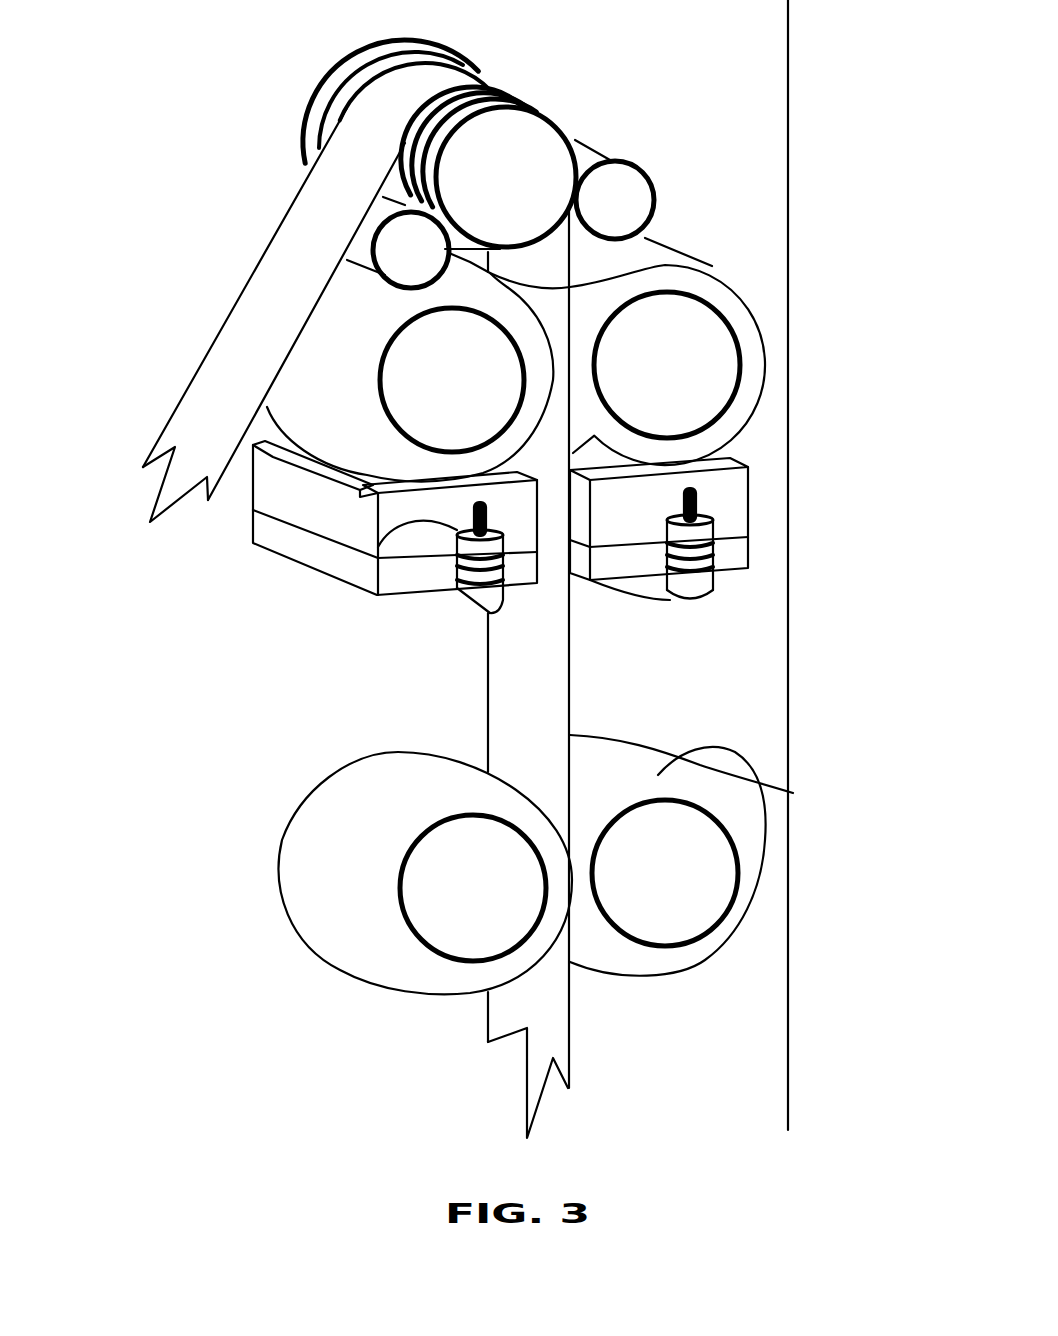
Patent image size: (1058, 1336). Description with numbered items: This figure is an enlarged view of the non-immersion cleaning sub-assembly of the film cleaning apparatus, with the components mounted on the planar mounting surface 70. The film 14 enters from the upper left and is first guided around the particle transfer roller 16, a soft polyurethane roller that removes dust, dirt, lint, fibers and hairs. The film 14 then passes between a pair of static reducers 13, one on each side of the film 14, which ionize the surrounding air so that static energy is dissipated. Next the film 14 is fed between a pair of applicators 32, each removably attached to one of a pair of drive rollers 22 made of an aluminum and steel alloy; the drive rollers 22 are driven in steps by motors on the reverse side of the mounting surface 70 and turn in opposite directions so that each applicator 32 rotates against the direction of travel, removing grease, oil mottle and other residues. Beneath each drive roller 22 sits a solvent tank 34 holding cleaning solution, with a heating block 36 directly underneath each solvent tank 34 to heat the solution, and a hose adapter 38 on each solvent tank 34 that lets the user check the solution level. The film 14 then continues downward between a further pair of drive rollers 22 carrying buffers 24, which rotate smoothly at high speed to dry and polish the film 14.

The static reducer 13 is at (613, 207).
The film 14 is at (367, 128).
The particle transfer roller 16 is at (537, 158).
The drive roller 22 is at (637, 407).
The buffer 24 is at (337, 823).
The applicator 32 is at (315, 417).
The solvent tank 34 is at (282, 508).
The heating block 36 is at (368, 578).
The hose adapter 38 is at (457, 533).
The mounting surface 70 is at (392, 690).